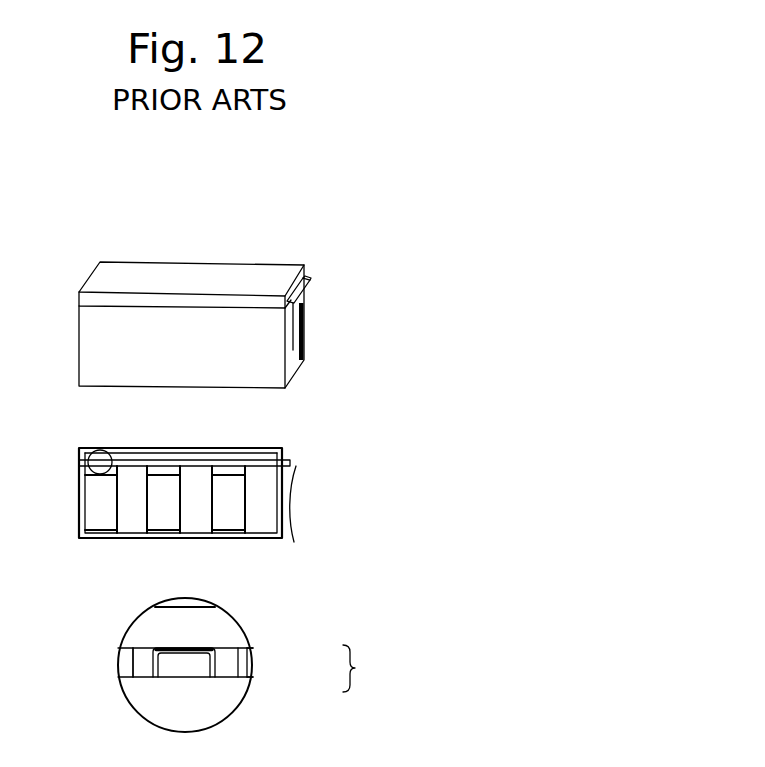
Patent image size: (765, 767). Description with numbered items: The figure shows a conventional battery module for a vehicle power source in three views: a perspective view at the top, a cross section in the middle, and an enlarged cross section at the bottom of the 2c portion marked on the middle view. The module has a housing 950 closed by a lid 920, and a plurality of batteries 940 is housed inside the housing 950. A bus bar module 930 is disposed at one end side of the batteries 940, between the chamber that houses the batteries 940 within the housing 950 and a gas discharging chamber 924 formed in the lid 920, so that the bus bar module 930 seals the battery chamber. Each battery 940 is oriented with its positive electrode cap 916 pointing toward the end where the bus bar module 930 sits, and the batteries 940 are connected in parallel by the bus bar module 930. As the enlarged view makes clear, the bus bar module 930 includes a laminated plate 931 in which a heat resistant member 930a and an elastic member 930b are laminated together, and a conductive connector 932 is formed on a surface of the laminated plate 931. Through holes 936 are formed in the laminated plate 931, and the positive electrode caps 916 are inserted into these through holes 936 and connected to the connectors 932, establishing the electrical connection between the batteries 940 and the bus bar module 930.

The lid 920 is at (218, 275).
The gas discharging chamber 924 is at (162, 455).
The bus bar module 930 is at (310, 282).
The heat resistant member 930a is at (252, 662).
The elastic member 930b is at (252, 672).
The laminated plate 931 is at (376, 668).
The conductive connector 932 is at (250, 460).
The through hole 936 is at (282, 448).
The battery 940 is at (260, 485).
The housing 950 is at (293, 347).
The positive electrode cap 916 is at (215, 647).
The 2c portion 2c is at (112, 452).